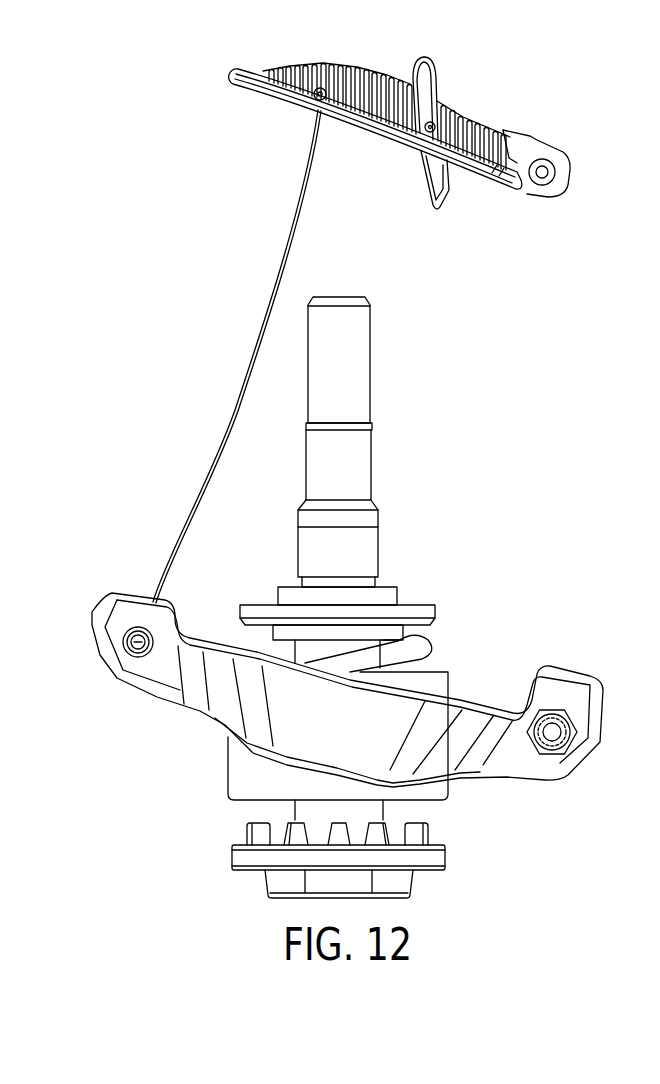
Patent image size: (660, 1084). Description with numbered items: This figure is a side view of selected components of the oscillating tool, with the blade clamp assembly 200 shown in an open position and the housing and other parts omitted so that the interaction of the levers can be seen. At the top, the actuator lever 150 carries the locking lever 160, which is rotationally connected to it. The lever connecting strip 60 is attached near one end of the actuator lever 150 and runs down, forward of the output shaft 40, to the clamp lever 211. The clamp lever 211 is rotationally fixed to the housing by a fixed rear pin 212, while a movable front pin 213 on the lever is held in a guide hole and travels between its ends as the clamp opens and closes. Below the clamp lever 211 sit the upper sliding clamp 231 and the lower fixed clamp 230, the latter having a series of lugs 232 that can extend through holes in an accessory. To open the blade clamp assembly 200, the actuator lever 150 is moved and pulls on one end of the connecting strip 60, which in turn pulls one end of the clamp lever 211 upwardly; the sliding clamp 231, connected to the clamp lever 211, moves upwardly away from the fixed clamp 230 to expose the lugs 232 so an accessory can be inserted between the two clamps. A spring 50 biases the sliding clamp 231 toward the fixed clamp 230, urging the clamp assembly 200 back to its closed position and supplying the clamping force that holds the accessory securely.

The output shaft 40 is at (360, 445).
The spring 50 is at (430, 648).
The lever connecting strip 60 is at (257, 351).
The actuator lever 150 is at (292, 66).
The locking lever 160 is at (430, 92).
The blade clamp assembly 200 is at (592, 765).
The clamp lever 211 is at (220, 722).
The fixed rear pin 212 is at (553, 733).
The movable front pin 213 is at (132, 640).
The lower fixed clamp 230 is at (403, 883).
The upper sliding clamp 231 is at (440, 788).
The lugs 232 is at (252, 832).